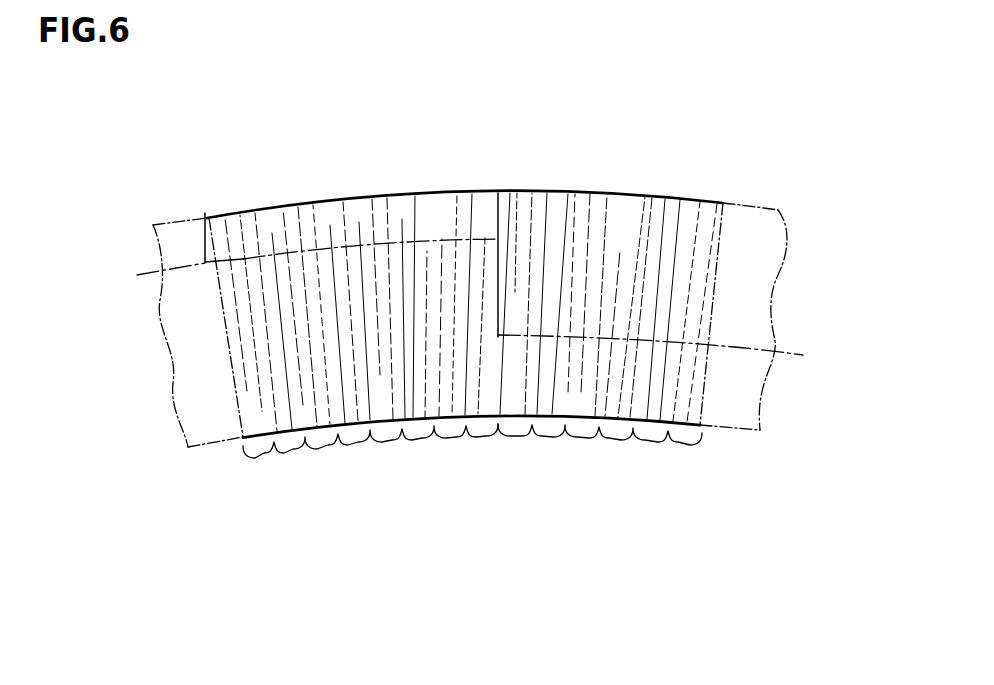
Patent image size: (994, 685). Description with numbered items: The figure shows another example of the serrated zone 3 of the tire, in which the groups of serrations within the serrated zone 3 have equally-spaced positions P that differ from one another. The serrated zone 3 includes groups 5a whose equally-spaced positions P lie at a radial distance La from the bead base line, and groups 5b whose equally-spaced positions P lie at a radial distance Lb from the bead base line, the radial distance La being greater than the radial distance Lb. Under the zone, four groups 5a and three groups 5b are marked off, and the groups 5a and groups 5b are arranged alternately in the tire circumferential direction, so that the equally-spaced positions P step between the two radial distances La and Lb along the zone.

The serrated zone 3 is at (719, 168).
The groups 5a is at (370, 455).
The groups 5b is at (600, 451).
The equally-spaced positions P is at (195, 216).
The radial distance La is at (188, 266).
The radial distance Lb is at (738, 348).